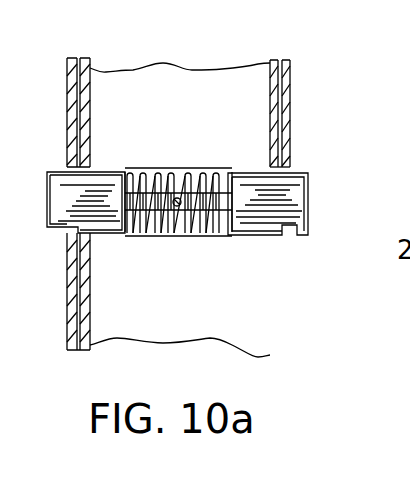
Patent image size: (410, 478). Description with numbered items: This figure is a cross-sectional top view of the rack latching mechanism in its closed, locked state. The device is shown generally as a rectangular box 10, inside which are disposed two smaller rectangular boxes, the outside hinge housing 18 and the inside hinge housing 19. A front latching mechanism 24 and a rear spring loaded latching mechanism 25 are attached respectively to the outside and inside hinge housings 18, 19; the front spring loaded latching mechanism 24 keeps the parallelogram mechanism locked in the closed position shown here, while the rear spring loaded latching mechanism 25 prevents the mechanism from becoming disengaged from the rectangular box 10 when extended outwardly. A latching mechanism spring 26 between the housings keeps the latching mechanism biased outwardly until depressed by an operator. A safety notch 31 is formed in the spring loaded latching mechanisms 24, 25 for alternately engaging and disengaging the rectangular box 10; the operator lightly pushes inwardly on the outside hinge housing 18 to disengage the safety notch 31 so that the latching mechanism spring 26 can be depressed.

The rectangular box 10 is at (70, 307).
The outside hinge housing 18 is at (340, 97).
The inside hinge housing 19 is at (275, 68).
The front latching mechanism 24 is at (86, 283).
The rear spring loaded latching mechanism 25 is at (53, 207).
The latching mechanism spring 26 is at (142, 168).
The safety notch 31 is at (292, 237).